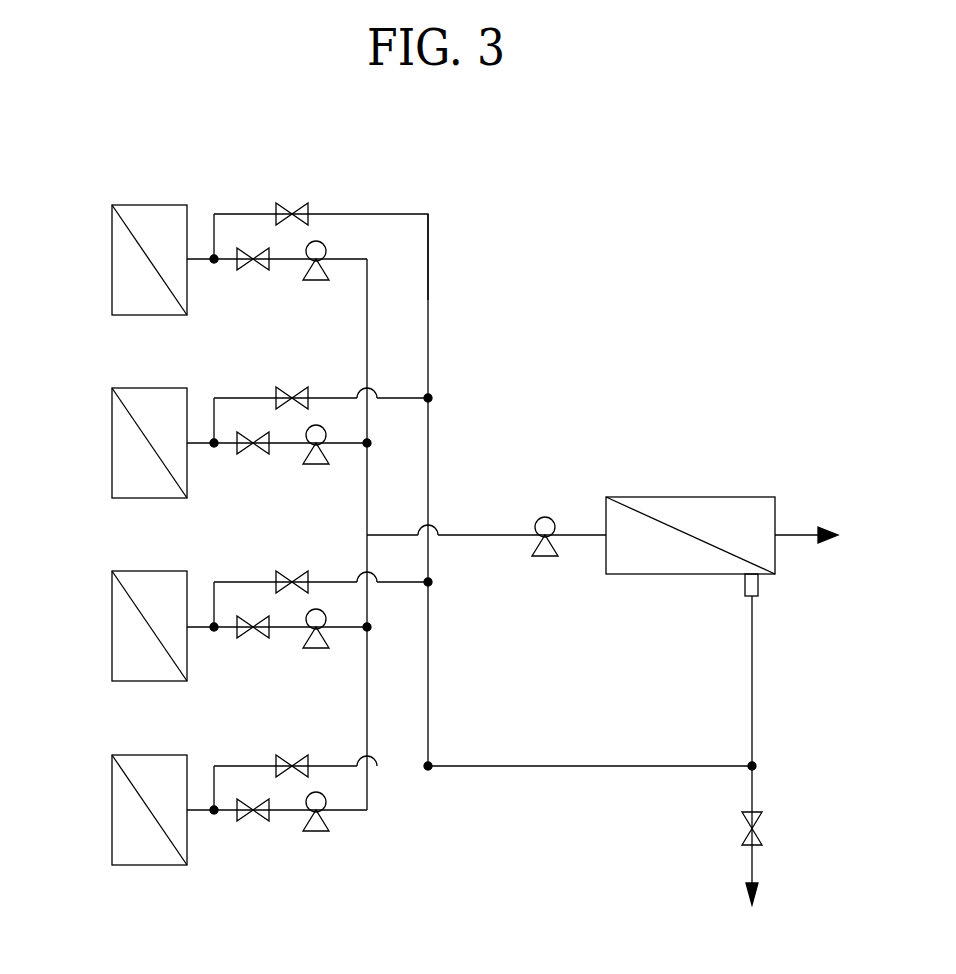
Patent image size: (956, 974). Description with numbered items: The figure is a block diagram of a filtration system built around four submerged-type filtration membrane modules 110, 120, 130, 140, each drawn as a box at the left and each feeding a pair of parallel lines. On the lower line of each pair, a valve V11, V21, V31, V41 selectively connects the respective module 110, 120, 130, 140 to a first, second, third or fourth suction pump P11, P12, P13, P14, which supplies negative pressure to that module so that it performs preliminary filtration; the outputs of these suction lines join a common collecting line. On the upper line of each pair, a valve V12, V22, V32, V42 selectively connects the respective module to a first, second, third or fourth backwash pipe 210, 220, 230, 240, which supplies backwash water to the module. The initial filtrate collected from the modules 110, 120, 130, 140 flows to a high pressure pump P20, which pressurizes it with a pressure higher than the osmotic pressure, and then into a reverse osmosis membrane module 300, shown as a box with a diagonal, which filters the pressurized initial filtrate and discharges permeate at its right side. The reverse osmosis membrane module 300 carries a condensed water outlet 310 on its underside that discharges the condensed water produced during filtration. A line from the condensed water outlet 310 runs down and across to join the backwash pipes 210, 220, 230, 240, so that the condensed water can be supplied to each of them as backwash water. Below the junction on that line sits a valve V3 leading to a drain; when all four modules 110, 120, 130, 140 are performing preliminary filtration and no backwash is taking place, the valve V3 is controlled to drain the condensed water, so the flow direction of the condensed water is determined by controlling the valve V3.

The first submerged-type filtration membrane module 110 is at (112, 259).
The second submerged-type filtration membrane module 120 is at (112, 443).
The third submerged-type filtration membrane module 130 is at (112, 627).
The fourth submerged-type filtration membrane module 140 is at (112, 810).
The first backwash pipe 210 is at (400, 214).
The second backwash pipe 220 is at (402, 398).
The third backwash pipe 230 is at (397, 585).
The fourth backwash pipe 240 is at (397, 769).
The reverse osmosis membrane module 300 is at (740, 497).
The condensed water outlet 310 is at (760, 586).
The high pressure pump P20 is at (545, 553).
The valve V3 is at (768, 828).
The valve V11 is at (252, 281).
The valve V12 is at (289, 199).
The first suction pump P11 is at (315, 277).
The valve V21 is at (252, 465).
The valve V22 is at (289, 383).
The second suction pump P12 is at (315, 461).
The valve V31 is at (252, 649).
The valve V32 is at (289, 567).
The third suction pump P13 is at (315, 645).
The valve V41 is at (252, 832).
The valve V42 is at (289, 751).
The fourth suction pump P14 is at (315, 828).